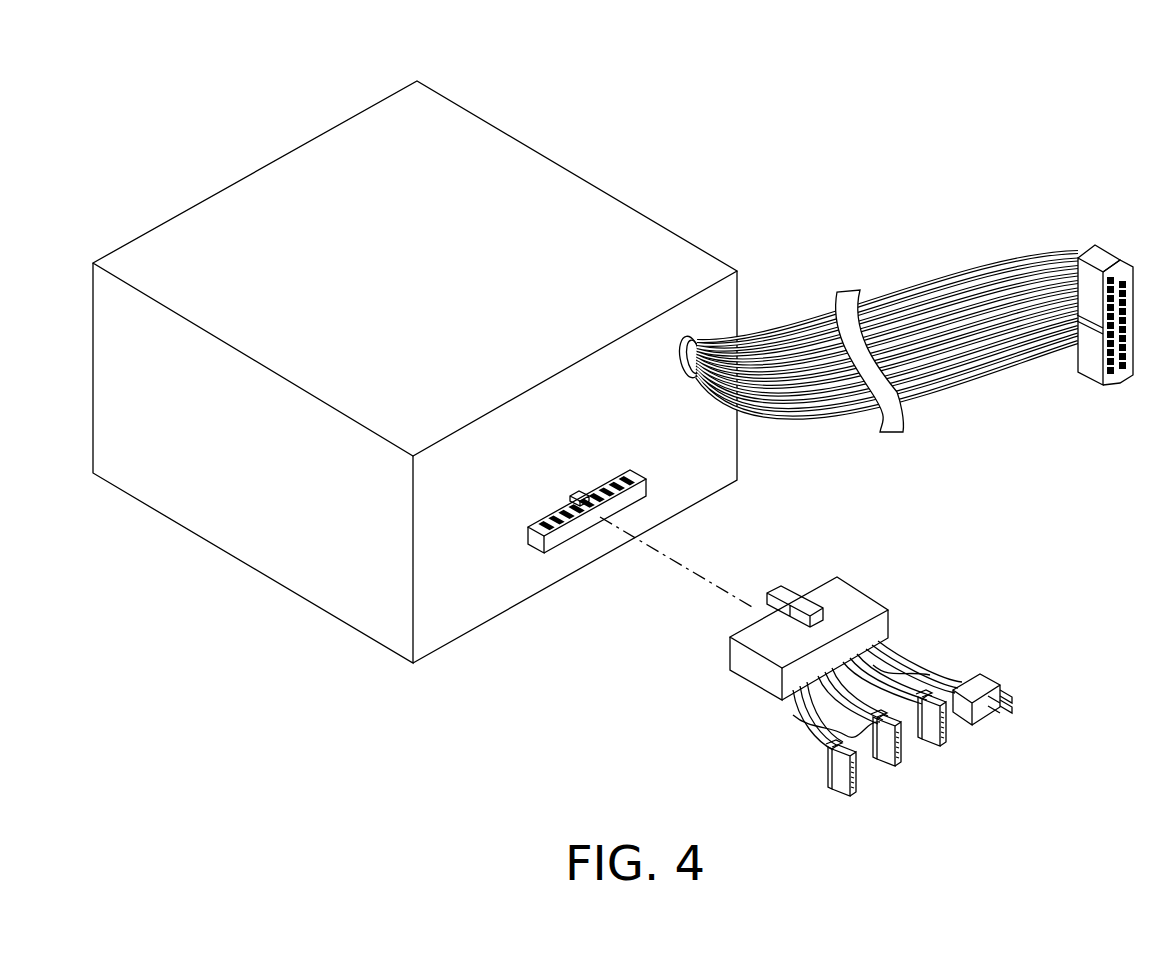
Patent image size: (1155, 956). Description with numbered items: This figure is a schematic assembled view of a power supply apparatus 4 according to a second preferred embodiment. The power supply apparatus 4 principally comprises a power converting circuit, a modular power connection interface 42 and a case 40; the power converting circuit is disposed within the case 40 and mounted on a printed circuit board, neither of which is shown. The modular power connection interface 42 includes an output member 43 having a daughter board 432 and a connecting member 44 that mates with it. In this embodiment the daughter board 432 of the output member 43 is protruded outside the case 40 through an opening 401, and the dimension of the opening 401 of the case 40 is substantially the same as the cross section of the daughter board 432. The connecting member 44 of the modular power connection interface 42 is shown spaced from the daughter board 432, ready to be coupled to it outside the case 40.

The power supply apparatus 4 is at (1092, 59).
The case 40 is at (597, 233).
The opening 401 is at (666, 540).
The modular power connection interface 42 is at (795, 686).
The output member 43 is at (596, 553).
The daughter board 432 is at (543, 549).
The connecting member 44 is at (733, 685).